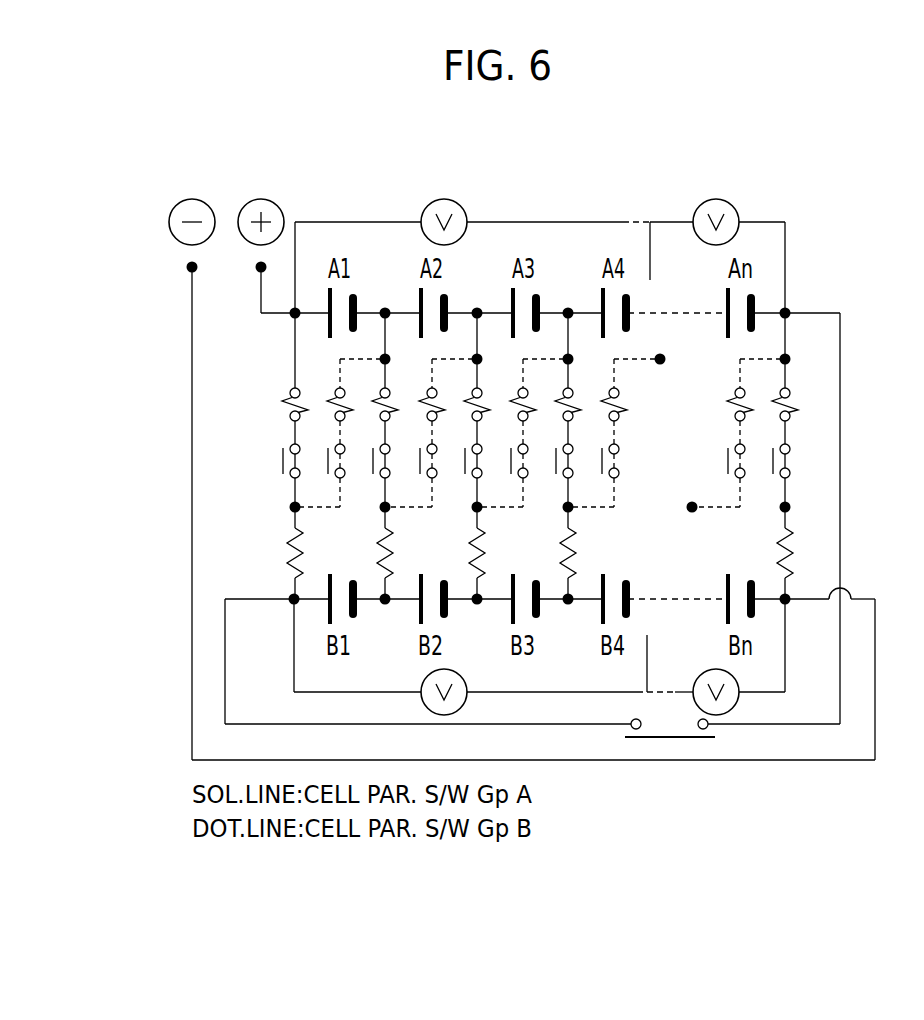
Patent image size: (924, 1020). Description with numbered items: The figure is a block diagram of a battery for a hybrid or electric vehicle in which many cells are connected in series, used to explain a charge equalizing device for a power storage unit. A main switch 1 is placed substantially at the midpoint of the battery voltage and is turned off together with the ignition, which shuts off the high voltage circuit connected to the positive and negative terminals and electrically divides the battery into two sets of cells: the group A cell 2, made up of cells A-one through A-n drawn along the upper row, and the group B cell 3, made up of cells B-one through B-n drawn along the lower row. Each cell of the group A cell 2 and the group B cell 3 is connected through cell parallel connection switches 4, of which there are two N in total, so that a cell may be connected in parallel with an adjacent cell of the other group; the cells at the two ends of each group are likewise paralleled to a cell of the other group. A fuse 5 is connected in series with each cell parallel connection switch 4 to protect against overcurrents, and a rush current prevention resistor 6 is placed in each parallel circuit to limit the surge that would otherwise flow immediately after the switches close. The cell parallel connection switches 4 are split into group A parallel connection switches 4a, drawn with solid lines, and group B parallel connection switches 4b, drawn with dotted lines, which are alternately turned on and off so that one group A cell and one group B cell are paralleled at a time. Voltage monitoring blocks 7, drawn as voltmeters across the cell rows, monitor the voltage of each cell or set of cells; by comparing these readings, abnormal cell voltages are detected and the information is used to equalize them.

The main switch 1 is at (680, 748).
The group A cell 2 is at (762, 290).
The group B cell 3 is at (750, 622).
The cell parallel connection switch 4 is at (795, 463).
The group A parallel connection switch 4a is at (283, 460).
The group B parallel connection switch 4b is at (330, 460).
The fuse 5 is at (795, 393).
The rush current prevention resistor 6 is at (795, 532).
The voltage monitoring block 7 is at (593, 222).